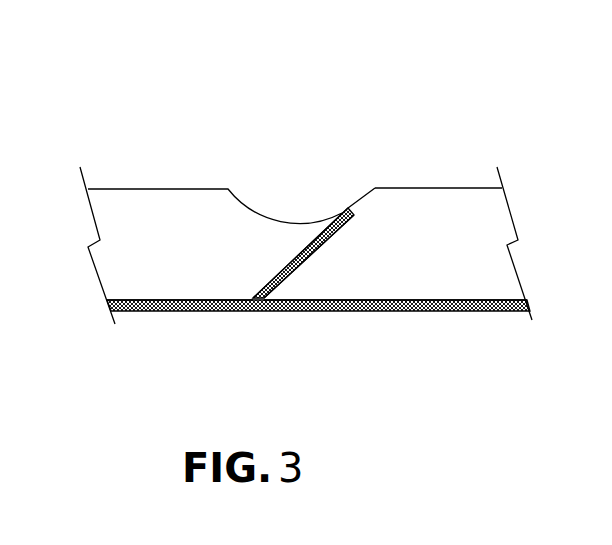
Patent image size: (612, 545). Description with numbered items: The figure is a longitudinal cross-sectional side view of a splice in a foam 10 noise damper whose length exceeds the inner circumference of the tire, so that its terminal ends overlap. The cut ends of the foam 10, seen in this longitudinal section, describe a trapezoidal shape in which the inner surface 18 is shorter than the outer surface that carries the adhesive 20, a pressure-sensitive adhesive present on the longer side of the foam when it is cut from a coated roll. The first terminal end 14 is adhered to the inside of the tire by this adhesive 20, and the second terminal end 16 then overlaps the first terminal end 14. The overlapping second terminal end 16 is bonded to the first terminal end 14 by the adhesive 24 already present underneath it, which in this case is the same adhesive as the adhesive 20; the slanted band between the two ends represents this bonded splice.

The foam 10 is at (180, 111).
The first terminal end 14 is at (347, 285).
The second terminal end 16 is at (240, 273).
The inner surface 18 is at (430, 187).
The adhesive 20 is at (148, 313).
The adhesive 24 is at (348, 212).